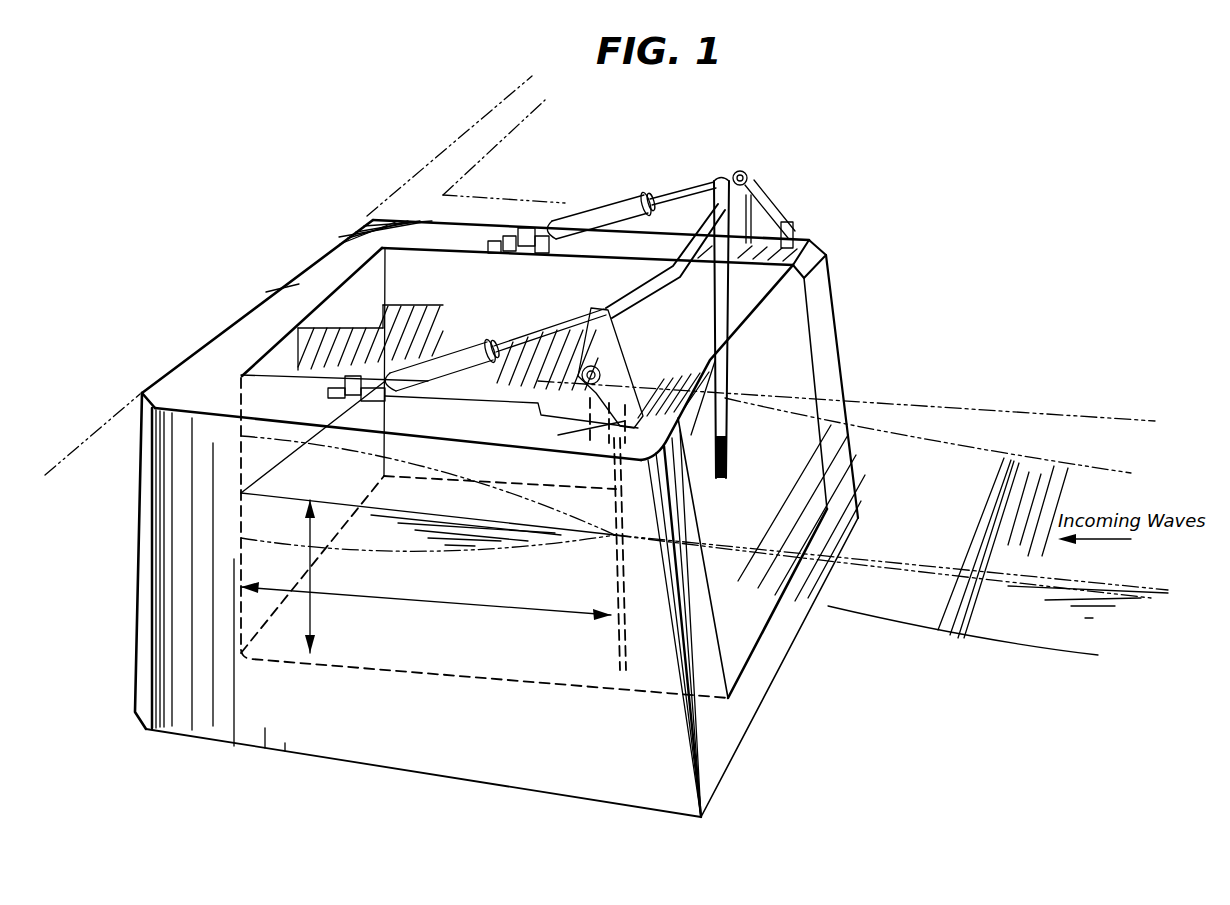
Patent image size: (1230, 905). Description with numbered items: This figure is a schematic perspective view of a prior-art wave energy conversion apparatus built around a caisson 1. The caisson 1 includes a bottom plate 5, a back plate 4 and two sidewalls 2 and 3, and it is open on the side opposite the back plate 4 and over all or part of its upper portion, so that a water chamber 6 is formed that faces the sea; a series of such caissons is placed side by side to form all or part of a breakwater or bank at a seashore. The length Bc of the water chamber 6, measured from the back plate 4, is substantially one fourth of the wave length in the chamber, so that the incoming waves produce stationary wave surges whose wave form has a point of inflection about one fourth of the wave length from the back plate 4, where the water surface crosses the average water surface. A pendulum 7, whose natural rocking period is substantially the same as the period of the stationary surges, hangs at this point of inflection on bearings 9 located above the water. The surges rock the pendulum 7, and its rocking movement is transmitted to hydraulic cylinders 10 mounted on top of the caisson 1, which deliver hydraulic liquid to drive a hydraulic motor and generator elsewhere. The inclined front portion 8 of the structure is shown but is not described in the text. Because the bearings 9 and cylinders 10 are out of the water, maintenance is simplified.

The caisson 1 is at (844, 290).
The sidewall 2 is at (828, 341).
The sidewall 3 is at (740, 706).
The back plate 4 is at (237, 298).
The bottom plate 5 is at (792, 620).
The water chamber 6 is at (554, 594).
The pendulum 7 is at (728, 297).
The inclined bottom 8 is at (707, 490).
The bearing 9 is at (779, 210).
The hydraulic cylinder 10 is at (474, 340).